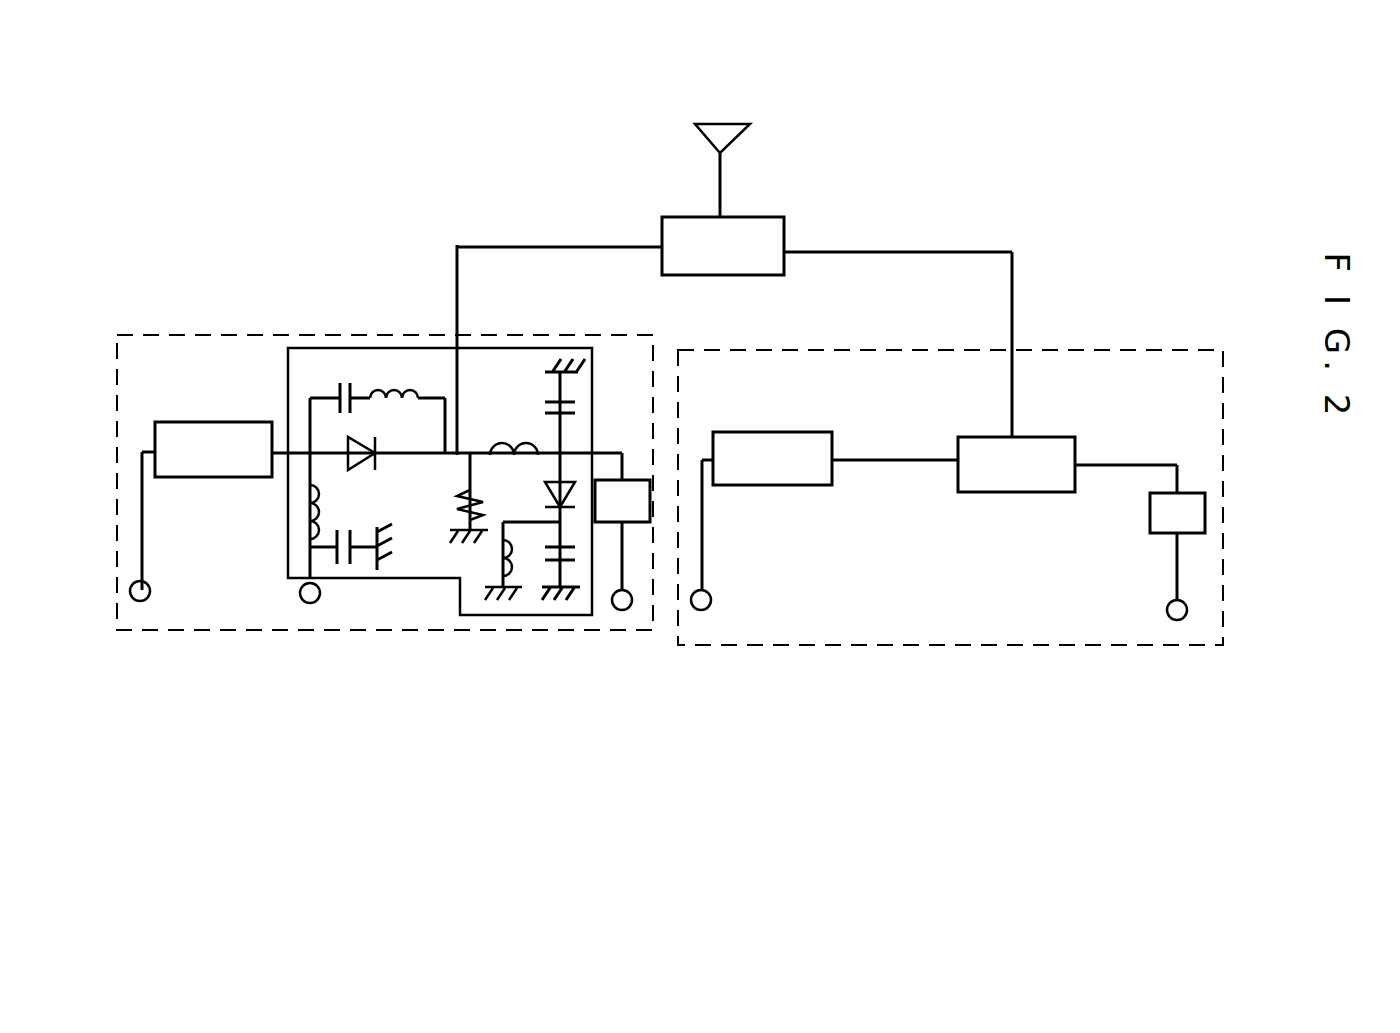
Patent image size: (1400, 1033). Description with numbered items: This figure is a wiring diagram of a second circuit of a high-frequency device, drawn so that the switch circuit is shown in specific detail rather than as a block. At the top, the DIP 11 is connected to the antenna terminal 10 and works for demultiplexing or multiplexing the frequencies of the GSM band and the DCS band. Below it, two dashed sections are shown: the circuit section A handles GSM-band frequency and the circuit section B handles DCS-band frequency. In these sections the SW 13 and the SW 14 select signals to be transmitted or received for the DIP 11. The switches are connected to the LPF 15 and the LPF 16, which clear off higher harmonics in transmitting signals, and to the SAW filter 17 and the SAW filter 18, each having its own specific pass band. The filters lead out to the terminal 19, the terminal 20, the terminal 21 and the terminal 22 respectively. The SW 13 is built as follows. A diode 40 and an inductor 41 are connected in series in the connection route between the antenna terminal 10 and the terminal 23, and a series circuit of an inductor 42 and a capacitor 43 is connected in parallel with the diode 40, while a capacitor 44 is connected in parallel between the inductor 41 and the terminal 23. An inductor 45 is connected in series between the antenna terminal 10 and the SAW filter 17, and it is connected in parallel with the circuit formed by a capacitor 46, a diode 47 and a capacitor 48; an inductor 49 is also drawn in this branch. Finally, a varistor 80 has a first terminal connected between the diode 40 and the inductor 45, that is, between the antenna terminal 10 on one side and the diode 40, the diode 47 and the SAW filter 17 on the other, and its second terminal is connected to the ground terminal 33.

The antenna terminal 10 is at (697, 135).
The DIP 11 is at (787, 232).
The SW 13 is at (435, 335).
The SW 14 is at (990, 492).
The LPF 15 is at (155, 435).
The LPF 16 is at (786, 485).
The SAW filter 17 is at (650, 503).
The SAW filter 18 is at (1150, 515).
The terminal 19 is at (142, 601).
The terminal 20 is at (620, 610).
The terminal 21 is at (698, 610).
The terminal 22 is at (1175, 620).
The terminal 23 is at (310, 603).
The ground terminal 33 is at (458, 534).
The diode 40 is at (345, 442).
The inductor 41 is at (296, 512).
The inductor 42 is at (393, 385).
The capacitor 43 is at (342, 380).
The capacitor 44 is at (343, 572).
The inductor 45 is at (498, 443).
The capacitor 46 is at (577, 408).
The diode 47 is at (563, 485).
The capacitor 48 is at (577, 553).
The inductor 49 is at (492, 562).
The varistor 80 is at (452, 498).
The circuit section A is at (152, 332).
The circuit section B is at (1130, 350).